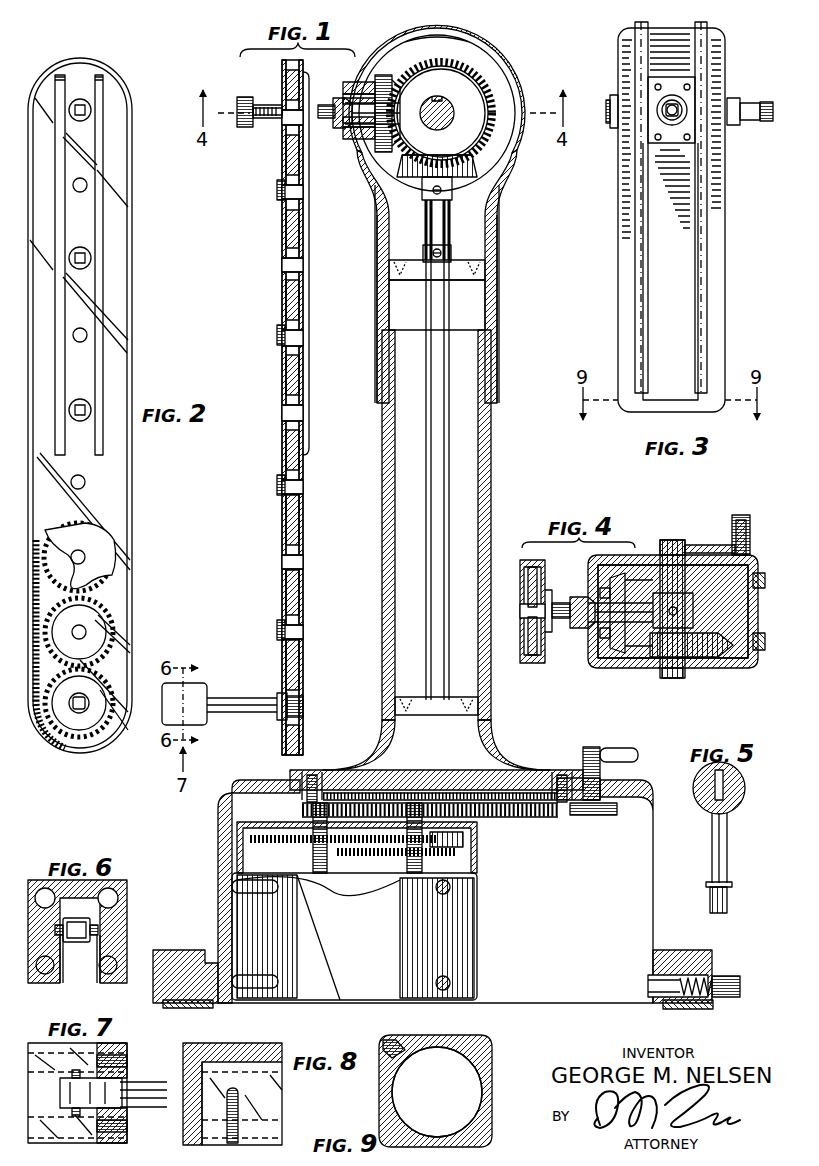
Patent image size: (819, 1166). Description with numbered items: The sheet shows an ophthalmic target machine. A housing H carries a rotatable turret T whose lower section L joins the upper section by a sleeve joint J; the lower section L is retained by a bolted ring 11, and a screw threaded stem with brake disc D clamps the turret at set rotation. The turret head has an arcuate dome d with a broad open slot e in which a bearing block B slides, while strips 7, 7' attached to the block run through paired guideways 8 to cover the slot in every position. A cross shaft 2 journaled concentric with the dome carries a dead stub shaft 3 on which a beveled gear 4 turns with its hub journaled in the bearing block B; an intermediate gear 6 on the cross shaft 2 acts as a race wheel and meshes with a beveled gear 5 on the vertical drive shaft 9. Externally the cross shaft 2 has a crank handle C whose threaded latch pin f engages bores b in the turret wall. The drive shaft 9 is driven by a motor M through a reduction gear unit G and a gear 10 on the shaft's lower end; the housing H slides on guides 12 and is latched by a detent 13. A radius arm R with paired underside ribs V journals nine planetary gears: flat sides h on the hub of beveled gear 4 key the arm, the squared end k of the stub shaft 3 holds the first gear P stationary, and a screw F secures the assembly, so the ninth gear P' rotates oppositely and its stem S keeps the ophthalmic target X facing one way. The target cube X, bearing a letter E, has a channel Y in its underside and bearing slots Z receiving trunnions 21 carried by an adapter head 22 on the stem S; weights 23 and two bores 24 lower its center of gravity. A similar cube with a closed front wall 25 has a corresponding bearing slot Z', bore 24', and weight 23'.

In FIG. 1, the screw F is at (262, 100).
In FIG. 1, the squared end k is at (326, 103).
In FIG. 3, the squared end k is at (648, 110).
In FIG. 4, the squared end k is at (565, 600).
In FIG. 1, the stub shaft 3 is at (339, 124).
In FIG. 4, the stub shaft 3 is at (583, 625).
In FIG. 1, the first planetary gear P is at (266, 132).
In FIG. 2, the first planetary gear P is at (82, 630).
In FIG. 1, the bearing block B is at (355, 142).
In FIG. 3, the bearing block B is at (668, 90).
In FIG. 1, the beveled gear 4 is at (383, 152).
In FIG. 4, the beveled gear 4 is at (622, 584).
In FIG. 1, the open slot e is at (464, 38).
In FIG. 1, the arcuate dome d is at (506, 52).
In FIG. 1, the cross shaft 2 is at (441, 126).
In FIG. 4, the cross shaft 2 is at (686, 576).
In FIG. 1, the strip 7' is at (465, 232).
In FIG. 4, the strip 7' is at (673, 611).
In FIG. 1, the intermediate gear 6 is at (462, 165).
In FIG. 4, the intermediate gear 6 is at (705, 640).
In FIG. 1, the beveled gear 5 is at (465, 182).
In FIG. 1, the turret T is at (508, 182).
In FIG. 3, the turret T is at (616, 250).
In FIG. 9, the turret T is at (377, 1085).
In FIG. 1, the strip 7 is at (359, 294).
In FIG. 3, the strip 7 is at (670, 271).
In FIG. 1, the vertical drive shaft 9 is at (427, 222).
In FIG. 1, the guideways 8 is at (380, 255).
In FIG. 3, the guideways 8 is at (700, 295).
In FIG. 4, the guideways 8 is at (760, 572).
In FIG. 1, the radius arm R is at (279, 298).
In FIG. 2, the radius arm R is at (102, 742).
In FIG. 4, the radius arm R is at (540, 662).
In FIG. 1, the ribs V is at (311, 292).
In FIG. 2, the ribs V is at (65, 372).
In FIG. 4, the ribs V is at (550, 628).
In FIG. 1, the sleeve joint J is at (482, 328).
In FIG. 9, the sleeve joint J is at (479, 1088).
In FIG. 1, the lower section L is at (380, 508).
In FIG. 1, the stem S is at (243, 697).
In FIG. 5, the stem S is at (728, 828).
In FIG. 7, the stem S is at (150, 1082).
In FIG. 1, the ninth gear P' is at (309, 697).
In FIG. 1, the ophthalmic target X is at (207, 720).
In FIG. 6, the ophthalmic target X is at (128, 880).
In FIG. 1, the letter E is at (184, 704).
In FIG. 1, the housing H is at (216, 860).
In FIG. 1, the reduction gear unit G is at (472, 840).
In FIG. 1, the ring 11 is at (510, 795).
In FIG. 1, the gear 10 is at (548, 818).
In FIG. 1, the brake disc clamp D is at (615, 812).
In FIG. 1, the guides and guide ways 12 is at (208, 960).
In FIG. 1, the motor M is at (354, 936).
In FIG. 1, the detent 13 is at (726, 975).
In FIG. 3, the flat sides h is at (698, 110).
In FIG. 4, the flat sides h is at (574, 598).
In FIG. 3, the crank handle C is at (748, 130).
In FIG. 4, the crank handle C is at (695, 543).
In FIG. 4, the threaded latch pin f is at (732, 525).
In FIG. 4, the bores b is at (740, 568).
In FIG. 6, the channel Y is at (82, 898).
In FIG. 7, the channel Y is at (77, 1093).
In FIG. 8, the channel Y is at (270, 1108).
In FIG. 6, the bores 24 is at (145, 902).
In FIG. 6, the adapter head 22 is at (80, 942).
In FIG. 7, the adapter head 22 is at (65, 1108).
In FIG. 6, the trunnions 21 is at (64, 955).
In FIG. 7, the trunnions 21 is at (78, 1072).
In FIG. 6, the weights 23 is at (40, 990).
In FIG. 7, the weights 23 is at (130, 1086).
In FIG. 6, the bearing slots Z is at (79, 994).
In FIG. 8, the front wall 25 is at (185, 1108).
In FIG. 8, the bearing slot Z' is at (222, 1111).
In FIG. 8, the bore 24' is at (265, 1088).
In FIG. 8, the weight 23' is at (255, 1108).